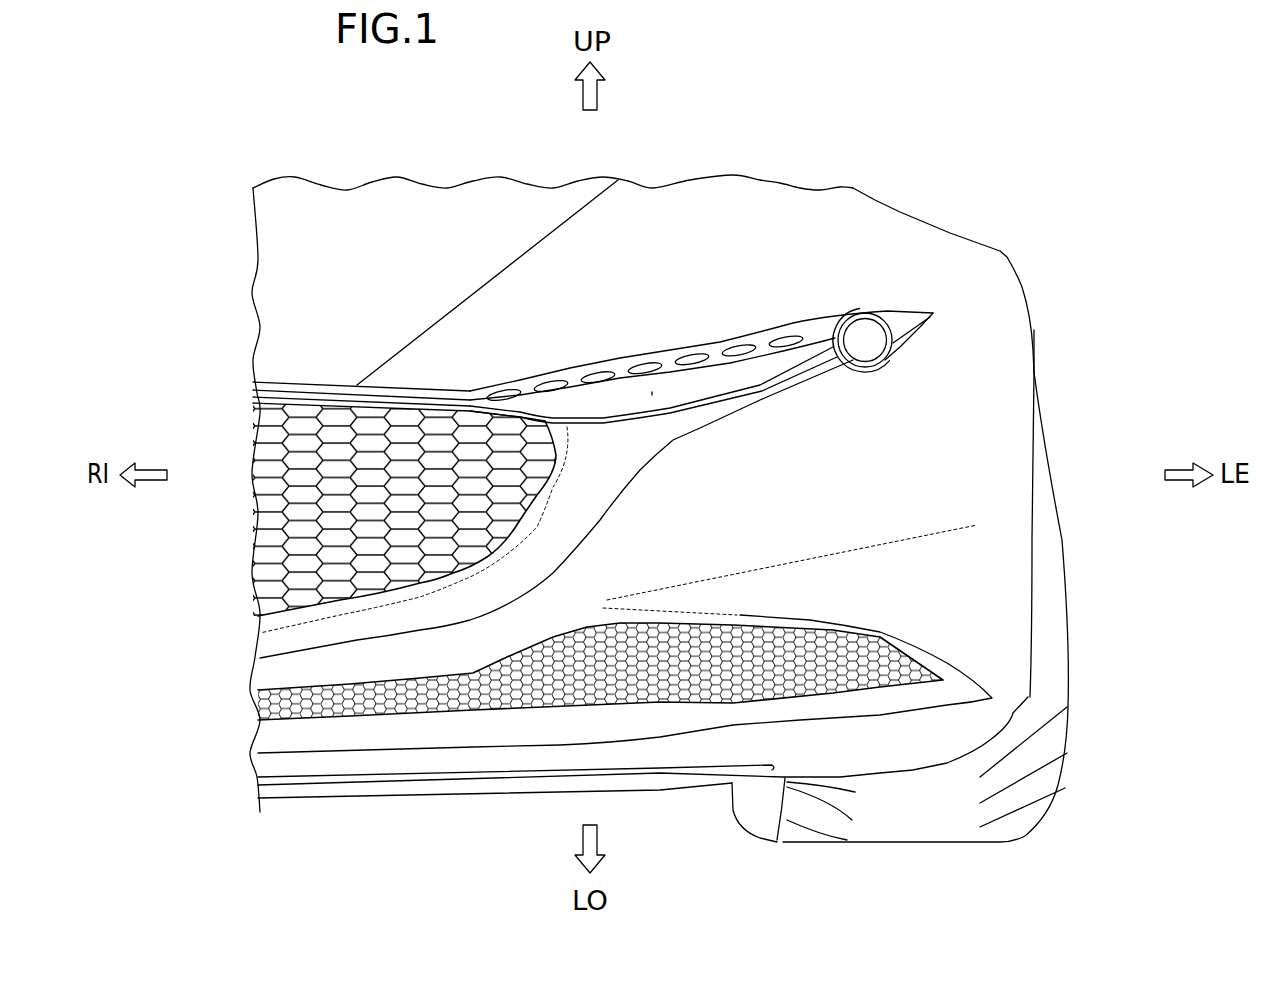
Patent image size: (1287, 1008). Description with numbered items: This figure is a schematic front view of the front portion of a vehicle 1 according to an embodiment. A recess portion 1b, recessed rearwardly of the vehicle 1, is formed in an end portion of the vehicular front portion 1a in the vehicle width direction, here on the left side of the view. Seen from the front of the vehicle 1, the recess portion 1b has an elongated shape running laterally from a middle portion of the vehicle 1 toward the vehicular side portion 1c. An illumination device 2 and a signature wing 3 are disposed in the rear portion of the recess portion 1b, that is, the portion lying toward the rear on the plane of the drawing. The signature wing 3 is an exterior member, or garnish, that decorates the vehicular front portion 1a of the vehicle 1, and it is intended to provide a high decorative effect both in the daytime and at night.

The vehicle 1 is at (1001, 188).
The vehicular front portion 1a is at (303, 458).
The recess portion 1b is at (811, 312).
The vehicular side portion 1c is at (1046, 324).
The illumination device 2 is at (930, 332).
The signature wing 3 is at (652, 392).